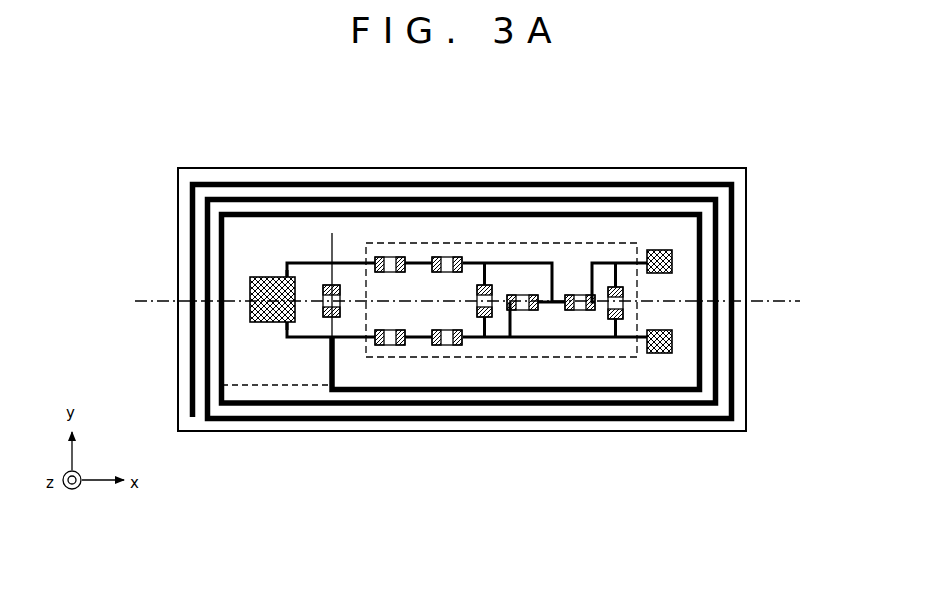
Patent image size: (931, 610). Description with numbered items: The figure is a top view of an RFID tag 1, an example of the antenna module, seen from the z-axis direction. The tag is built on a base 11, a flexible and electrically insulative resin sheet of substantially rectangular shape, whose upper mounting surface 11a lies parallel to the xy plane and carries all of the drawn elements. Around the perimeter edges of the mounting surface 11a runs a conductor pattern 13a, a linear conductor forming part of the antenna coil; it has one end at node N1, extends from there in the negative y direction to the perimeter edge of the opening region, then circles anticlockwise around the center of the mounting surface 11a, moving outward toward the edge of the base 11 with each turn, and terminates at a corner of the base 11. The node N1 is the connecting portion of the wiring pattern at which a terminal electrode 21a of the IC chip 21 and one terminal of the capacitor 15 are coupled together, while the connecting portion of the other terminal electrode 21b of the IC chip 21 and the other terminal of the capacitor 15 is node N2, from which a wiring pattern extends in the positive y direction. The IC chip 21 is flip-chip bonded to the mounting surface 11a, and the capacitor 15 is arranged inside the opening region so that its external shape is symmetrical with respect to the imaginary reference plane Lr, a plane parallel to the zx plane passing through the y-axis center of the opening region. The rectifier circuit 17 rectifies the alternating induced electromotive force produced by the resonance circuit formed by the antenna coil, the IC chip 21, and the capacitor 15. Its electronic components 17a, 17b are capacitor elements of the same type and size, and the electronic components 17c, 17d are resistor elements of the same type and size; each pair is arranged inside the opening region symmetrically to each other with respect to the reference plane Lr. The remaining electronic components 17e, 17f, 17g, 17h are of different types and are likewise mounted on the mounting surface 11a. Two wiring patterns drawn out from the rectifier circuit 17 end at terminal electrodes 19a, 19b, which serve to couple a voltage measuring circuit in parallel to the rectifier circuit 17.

The RFID tag 1 is at (162, 113).
The base 11 is at (762, 187).
The mounting surface 11a is at (627, 228).
The conductor pattern 13a is at (306, 178).
The capacitor 15 is at (320, 323).
The rectifier circuit 17 is at (566, 242).
The electronic component 17a is at (389, 256).
The electronic component 17b is at (390, 346).
The electronic component 17c is at (447, 256).
The electronic component 17d is at (447, 346).
The electronic component 17e is at (494, 318).
The electronic component 17f is at (540, 311).
The electronic component 17g is at (580, 311).
The electronic component 17h is at (622, 320).
The terminal electrode 19a is at (672, 263).
The terminal electrode 19b is at (672, 345).
The IC chip 21 is at (248, 285).
The terminal electrode 21a is at (288, 323).
The terminal electrode 21b is at (281, 277).
The node N1 is at (337, 341).
The node N2 is at (328, 260).
The reference plane Lr is at (480, 303).